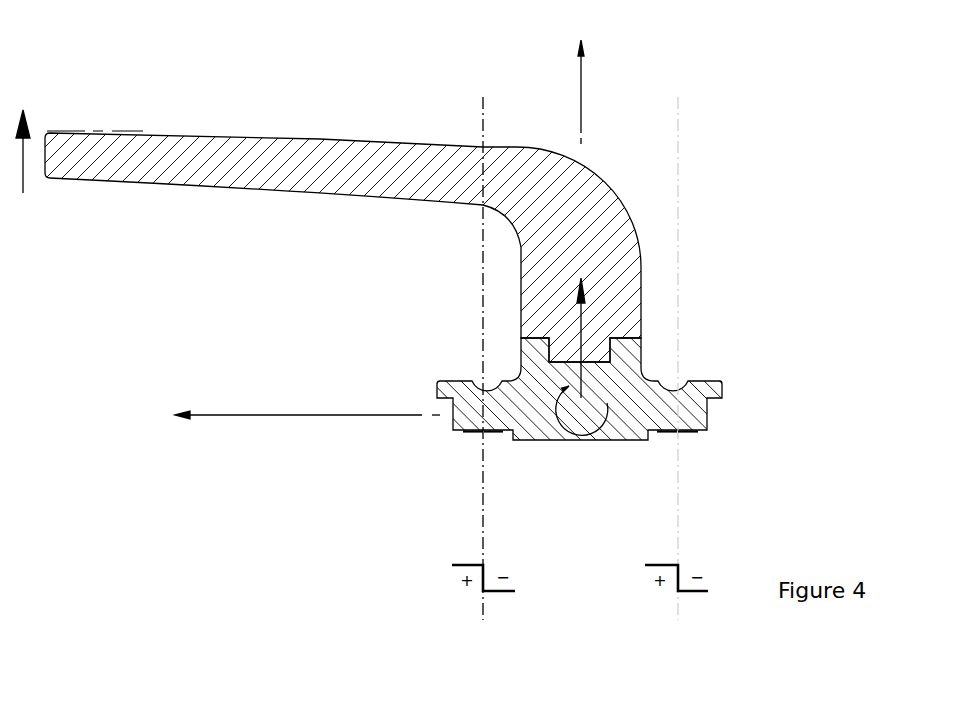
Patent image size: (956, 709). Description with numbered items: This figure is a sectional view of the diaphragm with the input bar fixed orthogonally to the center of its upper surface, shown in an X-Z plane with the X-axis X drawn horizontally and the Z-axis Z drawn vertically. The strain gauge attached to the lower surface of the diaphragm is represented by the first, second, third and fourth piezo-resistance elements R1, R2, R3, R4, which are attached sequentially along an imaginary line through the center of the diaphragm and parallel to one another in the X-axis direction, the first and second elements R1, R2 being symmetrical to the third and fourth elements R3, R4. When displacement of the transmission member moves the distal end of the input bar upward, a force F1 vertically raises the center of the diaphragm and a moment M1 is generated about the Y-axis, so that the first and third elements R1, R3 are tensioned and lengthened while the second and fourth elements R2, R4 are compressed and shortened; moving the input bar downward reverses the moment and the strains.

The force F1 is at (582, 325).
The moment M1 is at (570, 442).
The first piezo-resistance element R1 is at (472, 442).
The second piezo-resistance element R2 is at (494, 442).
The third piezo-resistance element R3 is at (666, 442).
The fourth piezo-resistance element R4 is at (689, 442).
The X-axis X is at (298, 416).
The Z-axis Z is at (582, 76).